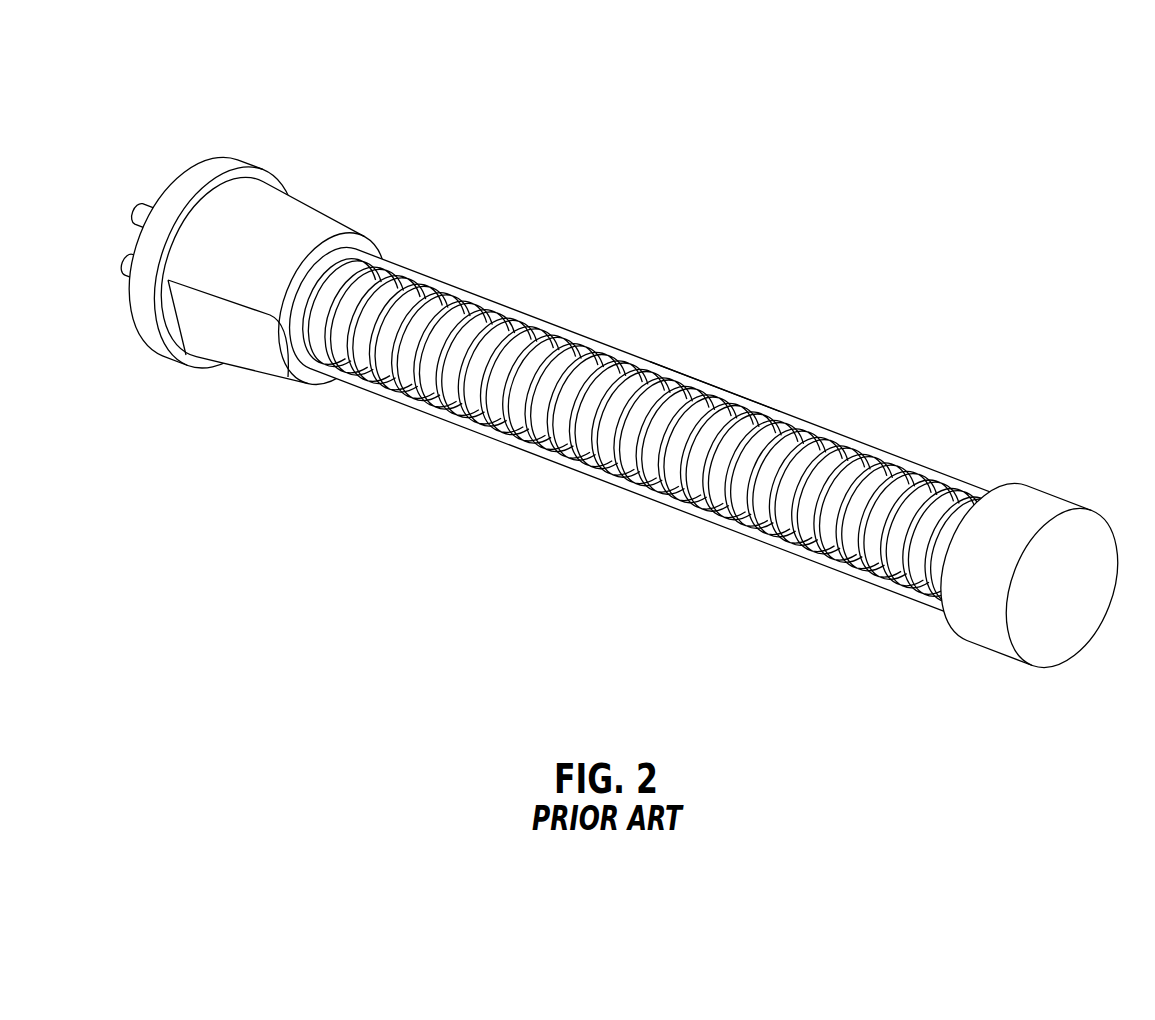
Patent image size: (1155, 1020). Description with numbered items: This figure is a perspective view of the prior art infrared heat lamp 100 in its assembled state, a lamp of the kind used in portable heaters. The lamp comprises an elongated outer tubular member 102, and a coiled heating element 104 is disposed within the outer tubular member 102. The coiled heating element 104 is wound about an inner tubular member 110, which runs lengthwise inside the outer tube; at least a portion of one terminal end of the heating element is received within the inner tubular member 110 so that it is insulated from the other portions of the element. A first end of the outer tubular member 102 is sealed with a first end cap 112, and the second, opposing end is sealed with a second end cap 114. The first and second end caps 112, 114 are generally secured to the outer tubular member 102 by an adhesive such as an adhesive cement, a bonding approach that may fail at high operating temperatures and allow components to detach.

The infrared heat lamp 100 is at (623, 364).
The outer tubular member 102 is at (607, 478).
The coiled heating element 104 is at (713, 390).
The inner tubular member 110 is at (488, 308).
The first end cap 112 is at (282, 212).
The second end cap 114 is at (1035, 512).